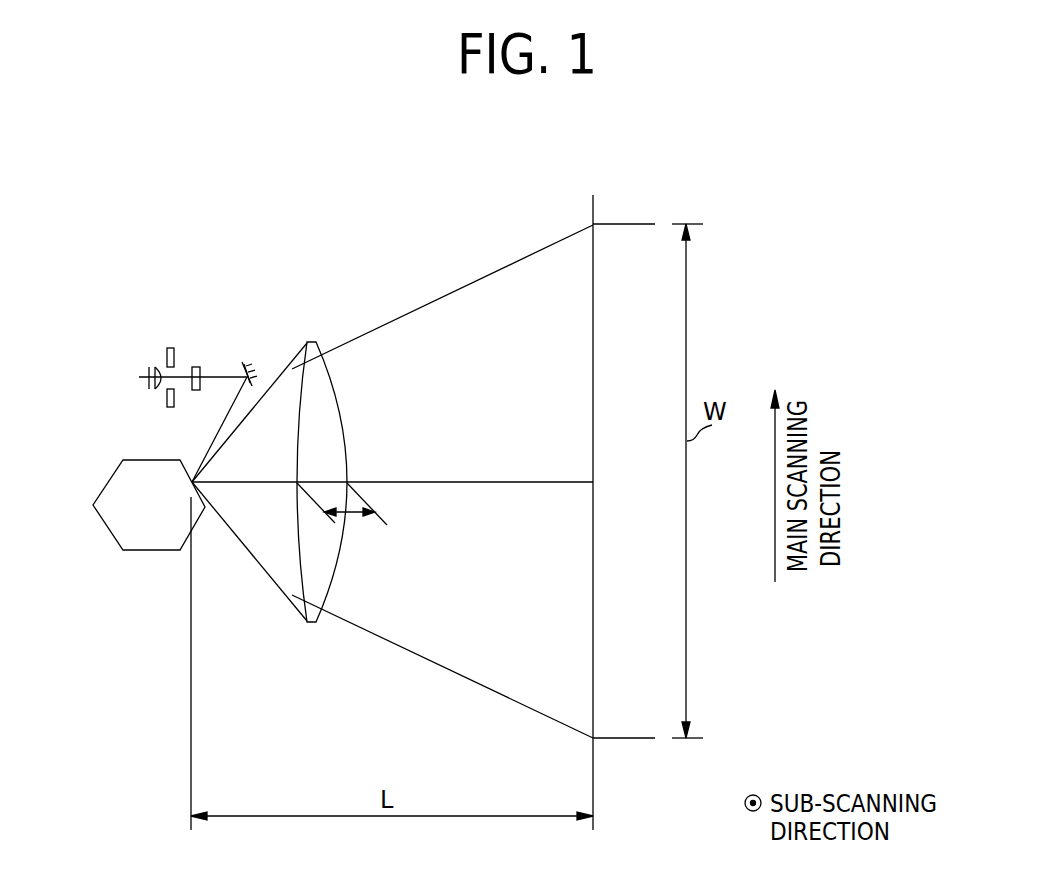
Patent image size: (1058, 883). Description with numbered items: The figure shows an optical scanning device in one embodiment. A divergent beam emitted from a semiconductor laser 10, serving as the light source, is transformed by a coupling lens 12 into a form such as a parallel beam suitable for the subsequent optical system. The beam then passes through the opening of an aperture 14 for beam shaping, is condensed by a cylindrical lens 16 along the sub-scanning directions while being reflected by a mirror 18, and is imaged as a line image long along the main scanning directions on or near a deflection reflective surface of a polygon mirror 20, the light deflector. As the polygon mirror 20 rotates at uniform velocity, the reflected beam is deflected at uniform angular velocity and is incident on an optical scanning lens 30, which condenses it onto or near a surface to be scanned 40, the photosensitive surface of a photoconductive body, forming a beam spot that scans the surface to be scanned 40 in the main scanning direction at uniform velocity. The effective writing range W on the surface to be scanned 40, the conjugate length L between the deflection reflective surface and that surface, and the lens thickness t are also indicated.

The semiconductor laser 10 is at (148, 381).
The coupling lens 12 is at (160, 390).
The aperture 14 is at (175, 353).
The cylindrical lens 16 is at (200, 371).
The mirror 18 is at (255, 373).
The polygon mirror 20 is at (115, 484).
The optical scanning lens 30 is at (323, 408).
The surface to be scanned 40 is at (594, 354).